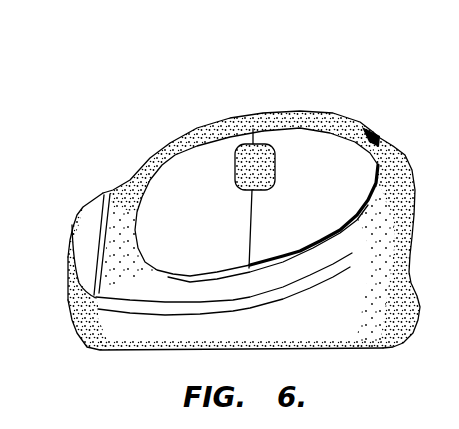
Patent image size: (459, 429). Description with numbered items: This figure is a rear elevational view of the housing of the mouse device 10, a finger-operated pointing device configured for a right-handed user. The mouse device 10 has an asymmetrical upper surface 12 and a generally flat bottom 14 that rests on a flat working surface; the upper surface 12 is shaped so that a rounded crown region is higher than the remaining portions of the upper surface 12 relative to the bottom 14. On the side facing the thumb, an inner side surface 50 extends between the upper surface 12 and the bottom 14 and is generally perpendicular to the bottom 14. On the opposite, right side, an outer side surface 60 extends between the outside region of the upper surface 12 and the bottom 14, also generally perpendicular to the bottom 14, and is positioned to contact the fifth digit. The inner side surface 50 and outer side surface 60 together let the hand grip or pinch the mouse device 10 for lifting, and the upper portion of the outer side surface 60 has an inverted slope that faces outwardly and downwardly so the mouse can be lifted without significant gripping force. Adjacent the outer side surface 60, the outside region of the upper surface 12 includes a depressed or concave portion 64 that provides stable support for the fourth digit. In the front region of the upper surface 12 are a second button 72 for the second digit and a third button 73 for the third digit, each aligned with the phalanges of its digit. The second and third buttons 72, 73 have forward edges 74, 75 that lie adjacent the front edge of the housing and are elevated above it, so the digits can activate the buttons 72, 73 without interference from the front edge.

The mouse device 10 is at (352, 58).
The upper surface 12 is at (257, 112).
The bottom 14 is at (143, 352).
The inner side surface 50 is at (410, 232).
The outer side surface 60 is at (66, 262).
The depressed portion 64 is at (116, 188).
The second button 72 is at (308, 207).
The third button 73 is at (192, 219).
The forward edge of second button 74 is at (293, 250).
The forward edge of third button 75 is at (176, 280).